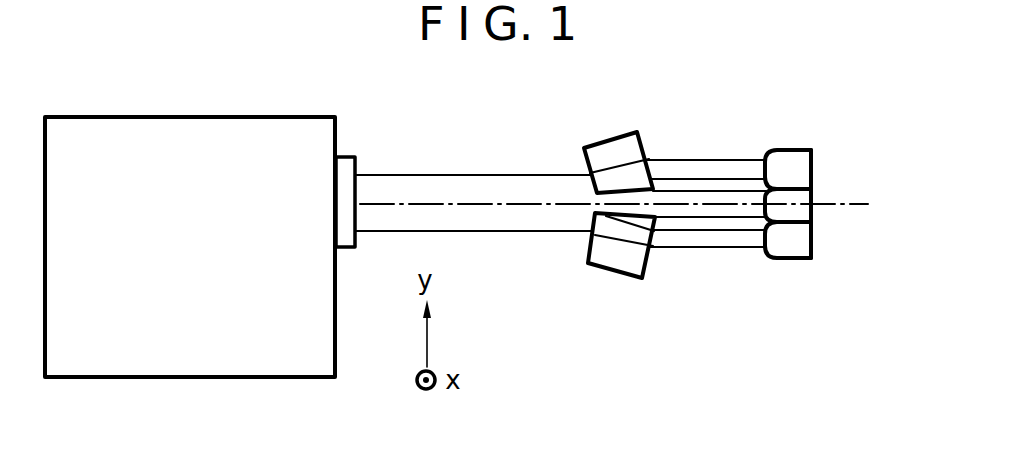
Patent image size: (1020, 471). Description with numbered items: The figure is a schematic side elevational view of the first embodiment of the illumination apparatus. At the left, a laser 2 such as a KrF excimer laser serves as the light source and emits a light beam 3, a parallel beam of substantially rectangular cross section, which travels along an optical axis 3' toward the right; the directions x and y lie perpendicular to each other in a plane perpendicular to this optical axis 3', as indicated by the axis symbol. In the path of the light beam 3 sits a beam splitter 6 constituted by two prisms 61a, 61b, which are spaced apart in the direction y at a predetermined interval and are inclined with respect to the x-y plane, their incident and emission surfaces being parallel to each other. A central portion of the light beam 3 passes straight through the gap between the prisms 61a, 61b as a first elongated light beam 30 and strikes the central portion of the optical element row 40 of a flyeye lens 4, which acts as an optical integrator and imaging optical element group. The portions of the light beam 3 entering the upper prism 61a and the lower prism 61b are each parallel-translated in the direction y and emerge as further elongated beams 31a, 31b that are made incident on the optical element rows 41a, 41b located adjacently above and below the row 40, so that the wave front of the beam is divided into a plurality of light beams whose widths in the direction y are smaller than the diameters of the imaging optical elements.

The laser 2 is at (260, 360).
The light beam 3 is at (473, 161).
The optical axis 3' is at (614, 145).
The beam splitter 6 is at (593, 213).
The prism 61a is at (617, 142).
The prism 61b is at (612, 262).
The upper branch optical fiber 31a is at (705, 178).
The lower branch optical fiber 31b is at (732, 232).
The first elongated light beam 30 is at (688, 193).
The flyeye lens 4 is at (805, 213).
The optical element row 40 is at (803, 213).
The optical element row 41a is at (787, 162).
The optical element row 41b is at (793, 242).